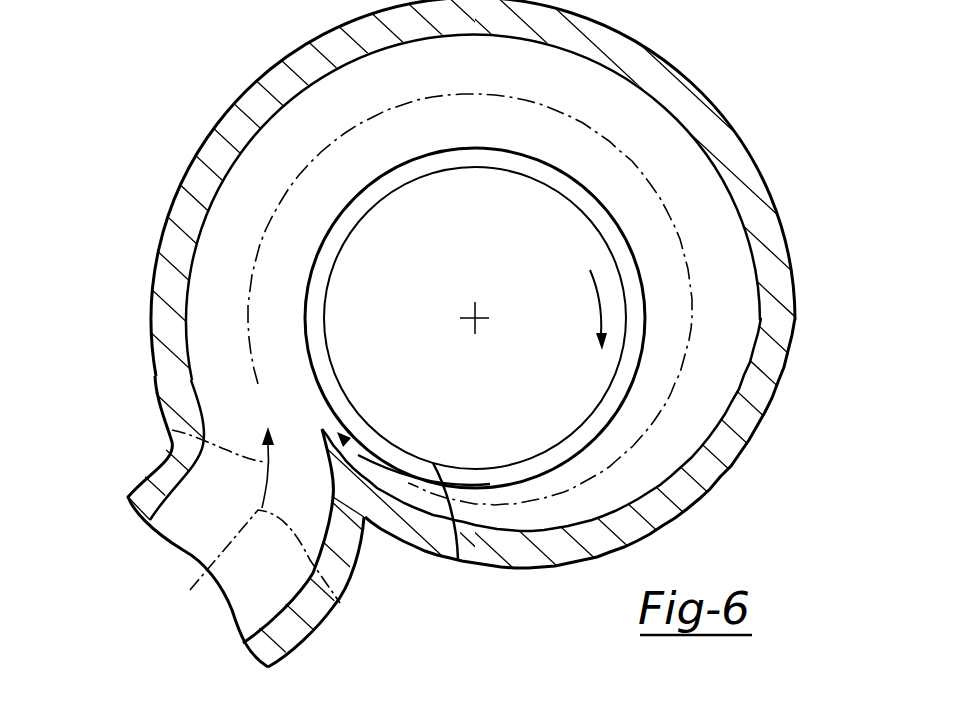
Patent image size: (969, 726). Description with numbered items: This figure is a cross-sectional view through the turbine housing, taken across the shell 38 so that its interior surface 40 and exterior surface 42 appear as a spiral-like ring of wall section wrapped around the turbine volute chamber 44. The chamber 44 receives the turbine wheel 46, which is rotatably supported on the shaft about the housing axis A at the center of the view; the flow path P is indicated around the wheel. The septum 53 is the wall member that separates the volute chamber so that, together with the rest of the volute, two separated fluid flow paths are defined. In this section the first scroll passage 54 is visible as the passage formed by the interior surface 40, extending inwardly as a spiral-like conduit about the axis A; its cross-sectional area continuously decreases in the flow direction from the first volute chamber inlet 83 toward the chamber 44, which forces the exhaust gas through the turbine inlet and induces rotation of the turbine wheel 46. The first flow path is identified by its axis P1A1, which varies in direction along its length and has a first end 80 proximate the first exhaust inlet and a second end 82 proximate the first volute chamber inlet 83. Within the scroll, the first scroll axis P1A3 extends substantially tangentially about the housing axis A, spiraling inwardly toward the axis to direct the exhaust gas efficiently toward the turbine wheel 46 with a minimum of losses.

The shell 38 is at (174, 177).
The interior surface 40 is at (273, 112).
The exterior surface 42 is at (150, 288).
The turbine volute chamber 44 is at (488, 234).
The turbine wheel 46 is at (458, 560).
The septum 53 is at (325, 350).
The first scroll passage 54 is at (488, 76).
The first end 80 is at (205, 580).
The second end 82 is at (172, 430).
The first volute chamber inlet 83 is at (320, 427).
The housing axis A is at (472, 321).
The fluid flow path P is at (592, 299).
The first axis of the first flow path P1A1 is at (340, 603).
The first scroll axis of the first flow path P1A3 is at (255, 268).